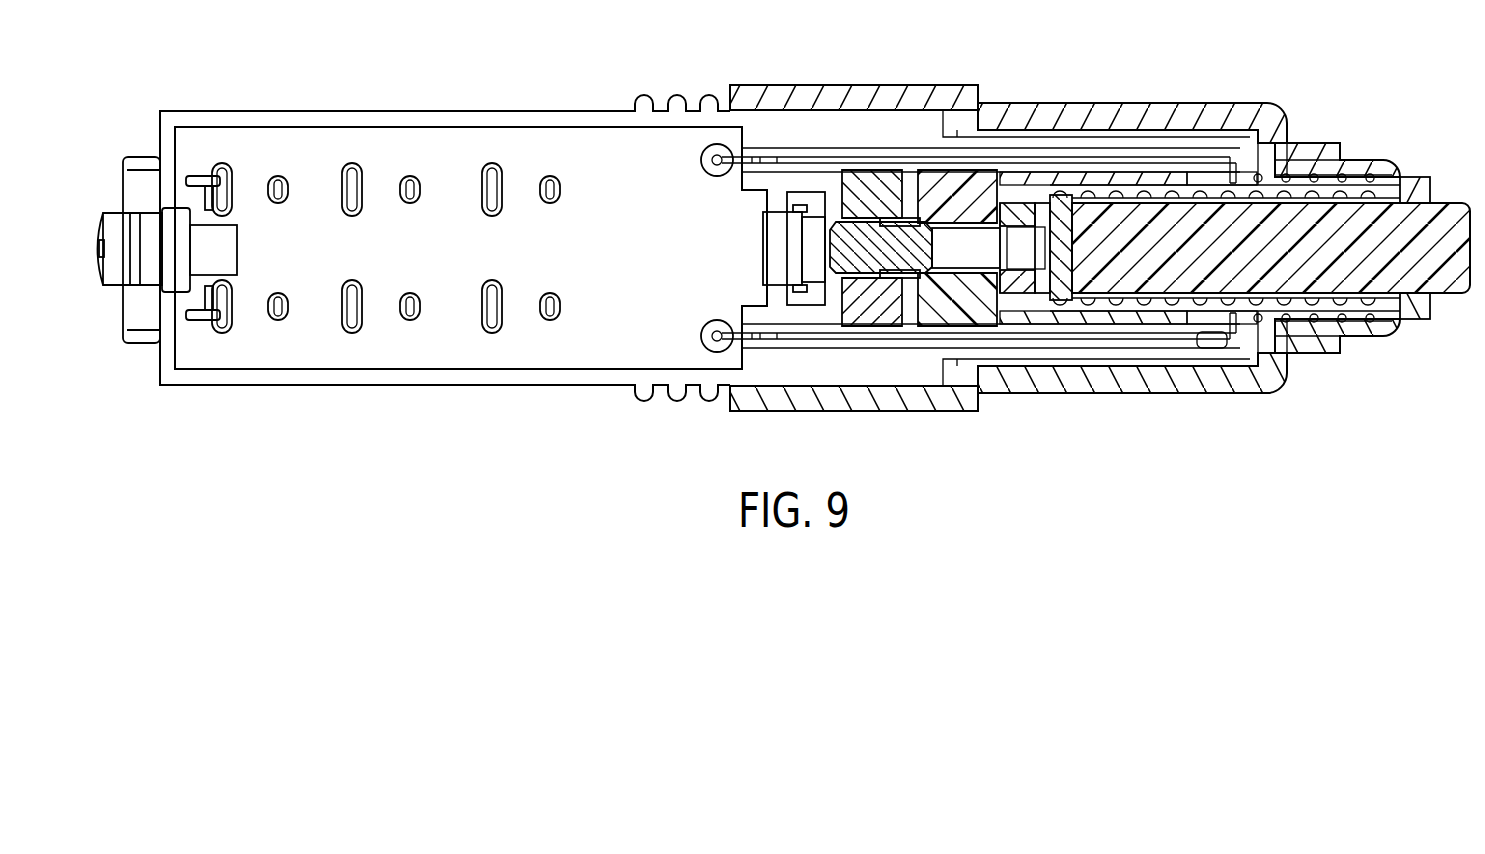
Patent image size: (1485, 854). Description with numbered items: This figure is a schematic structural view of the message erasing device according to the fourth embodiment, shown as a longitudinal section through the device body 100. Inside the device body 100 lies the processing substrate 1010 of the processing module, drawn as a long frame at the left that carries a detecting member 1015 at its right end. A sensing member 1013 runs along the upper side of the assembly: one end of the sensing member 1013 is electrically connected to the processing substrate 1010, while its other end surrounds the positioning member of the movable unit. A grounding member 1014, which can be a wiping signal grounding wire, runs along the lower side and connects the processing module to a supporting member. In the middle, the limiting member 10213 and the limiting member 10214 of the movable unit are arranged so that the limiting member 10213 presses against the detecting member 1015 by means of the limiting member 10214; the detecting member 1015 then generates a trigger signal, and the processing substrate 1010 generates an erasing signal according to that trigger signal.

The device body 100 is at (797, 100).
The processing substrate 1010 is at (442, 158).
The sensing member 1013 is at (1075, 157).
The grounding member 1014 is at (1053, 342).
The detecting member 1015 is at (787, 248).
The limiting member 10213 is at (945, 298).
The limiting member 10214 is at (858, 250).